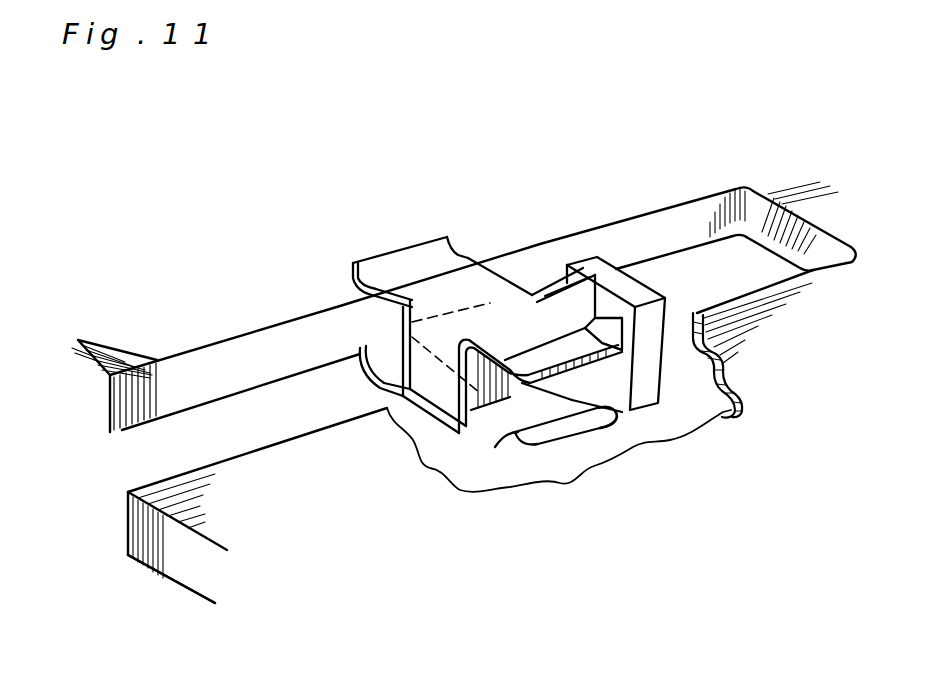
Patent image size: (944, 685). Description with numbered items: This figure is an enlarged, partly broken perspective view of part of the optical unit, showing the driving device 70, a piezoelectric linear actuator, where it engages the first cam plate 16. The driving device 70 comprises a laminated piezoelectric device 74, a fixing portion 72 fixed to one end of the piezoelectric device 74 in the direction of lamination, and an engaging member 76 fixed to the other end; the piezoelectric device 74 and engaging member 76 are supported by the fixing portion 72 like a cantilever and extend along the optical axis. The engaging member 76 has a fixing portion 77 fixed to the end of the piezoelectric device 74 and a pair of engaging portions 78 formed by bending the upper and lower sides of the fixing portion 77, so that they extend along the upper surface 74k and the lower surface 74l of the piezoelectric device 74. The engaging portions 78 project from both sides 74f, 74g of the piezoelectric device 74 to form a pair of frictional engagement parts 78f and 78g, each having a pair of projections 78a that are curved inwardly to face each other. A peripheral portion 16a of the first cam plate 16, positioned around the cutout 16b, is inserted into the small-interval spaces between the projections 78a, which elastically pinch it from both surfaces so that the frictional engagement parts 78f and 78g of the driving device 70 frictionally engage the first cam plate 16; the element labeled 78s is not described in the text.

The first cam plate 16 is at (695, 193).
The peripheral portion 16a is at (320, 462).
The cutout 16b is at (157, 448).
The driving device 70 is at (570, 123).
The fixing portion 72 is at (595, 262).
The piezoelectric device 74 is at (535, 293).
The side of the piezoelectric device 74g is at (555, 287).
The upper surface 74k is at (597, 300).
The side of the piezoelectric device 74f is at (626, 335).
The lower surface 74l is at (610, 400).
The engaging member 76 is at (423, 182).
The fixing portion 77 is at (362, 350).
The engaging portion 78 is at (437, 290).
The projection 78a is at (546, 441).
The frictional engagement part 78f is at (531, 362).
The frictional engagement part 78g is at (405, 330).
The spring portion of lower leg 78s is at (622, 425).